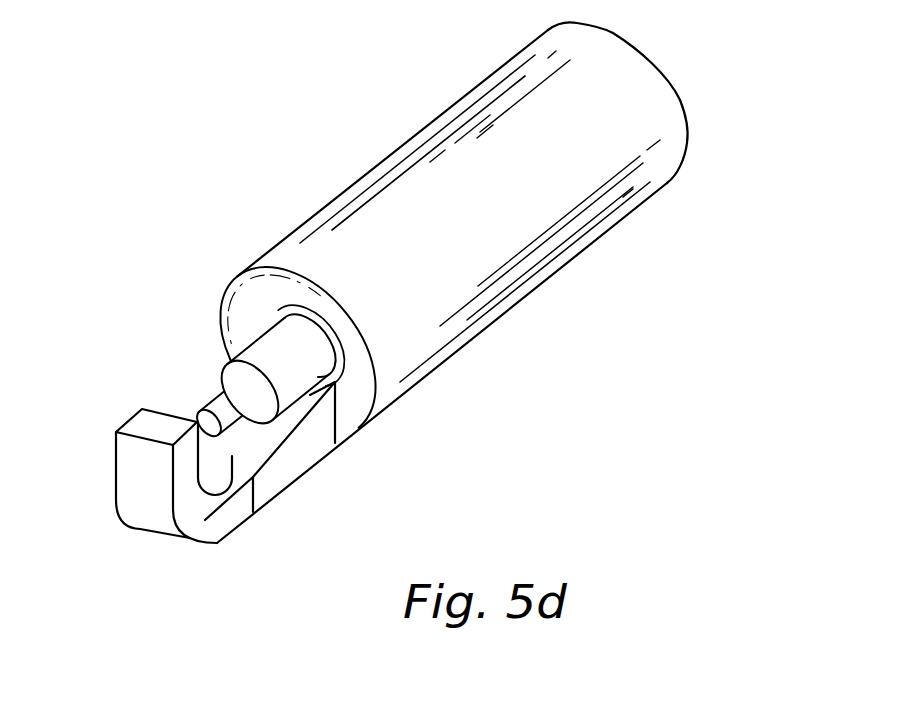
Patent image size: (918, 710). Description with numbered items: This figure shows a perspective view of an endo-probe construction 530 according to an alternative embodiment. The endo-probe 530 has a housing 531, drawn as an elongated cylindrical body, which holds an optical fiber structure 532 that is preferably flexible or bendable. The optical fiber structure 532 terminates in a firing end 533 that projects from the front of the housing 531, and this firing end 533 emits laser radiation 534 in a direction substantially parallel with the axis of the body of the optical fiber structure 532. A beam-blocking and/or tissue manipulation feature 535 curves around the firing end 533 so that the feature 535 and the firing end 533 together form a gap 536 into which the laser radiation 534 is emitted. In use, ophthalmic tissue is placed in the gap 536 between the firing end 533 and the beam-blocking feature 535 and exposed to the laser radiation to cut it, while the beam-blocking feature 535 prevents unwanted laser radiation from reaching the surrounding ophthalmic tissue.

The endo-probe construction 530 is at (238, 83).
The housing 531 is at (573, 260).
The optical fiber structure 532 is at (292, 387).
The firing end 533 is at (263, 410).
The laser radiation 534 is at (193, 410).
The beam-blocking and/or tissue manipulation feature 535 is at (133, 470).
The gap 536 is at (222, 486).